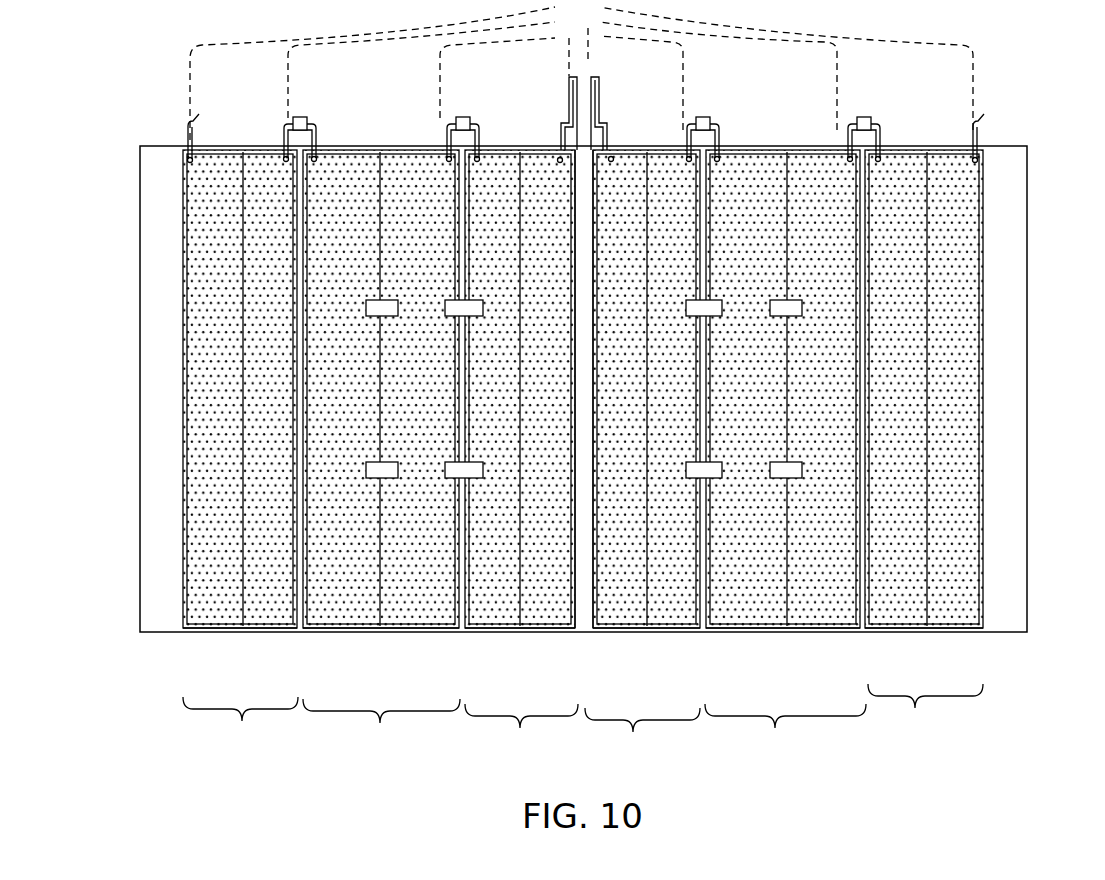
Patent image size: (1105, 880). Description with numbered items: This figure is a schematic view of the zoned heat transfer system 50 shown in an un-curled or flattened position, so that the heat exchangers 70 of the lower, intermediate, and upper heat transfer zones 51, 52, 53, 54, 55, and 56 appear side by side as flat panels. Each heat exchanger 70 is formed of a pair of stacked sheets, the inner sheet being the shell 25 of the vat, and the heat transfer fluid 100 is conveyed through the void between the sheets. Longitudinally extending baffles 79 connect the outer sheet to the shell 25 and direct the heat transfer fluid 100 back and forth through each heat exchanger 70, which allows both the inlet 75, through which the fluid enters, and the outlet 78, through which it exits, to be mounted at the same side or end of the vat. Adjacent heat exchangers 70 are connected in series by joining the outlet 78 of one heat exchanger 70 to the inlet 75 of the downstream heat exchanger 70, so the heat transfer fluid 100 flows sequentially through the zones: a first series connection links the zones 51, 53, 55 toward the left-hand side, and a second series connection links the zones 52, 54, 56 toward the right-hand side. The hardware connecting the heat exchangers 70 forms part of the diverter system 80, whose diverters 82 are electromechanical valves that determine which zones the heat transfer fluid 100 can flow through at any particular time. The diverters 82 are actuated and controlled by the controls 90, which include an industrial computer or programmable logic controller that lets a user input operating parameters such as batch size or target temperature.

The shell 25 is at (1031, 206).
The zoned heat transfer system 50 is at (566, 460).
The lower heat transfer zone 51 is at (521, 459).
The lower heat transfer zone 52 is at (642, 460).
The intermediate heat transfer zone 53 is at (381, 458).
The intermediate heat transfer zone 54 is at (785, 460).
The upper heat transfer zone 55 is at (240, 454).
The upper heat transfer zone 56 is at (924, 449).
The heat exchanger 70 is at (274, 642).
The inlet 75 is at (286, 156).
The outlet 78 is at (189, 155).
The baffle 79 is at (243, 540).
The diverter system 80 is at (613, 118).
The diverter 82 is at (306, 119).
The controls 90 is at (581, 70).
The heat transfer fluid 100 is at (517, 140).